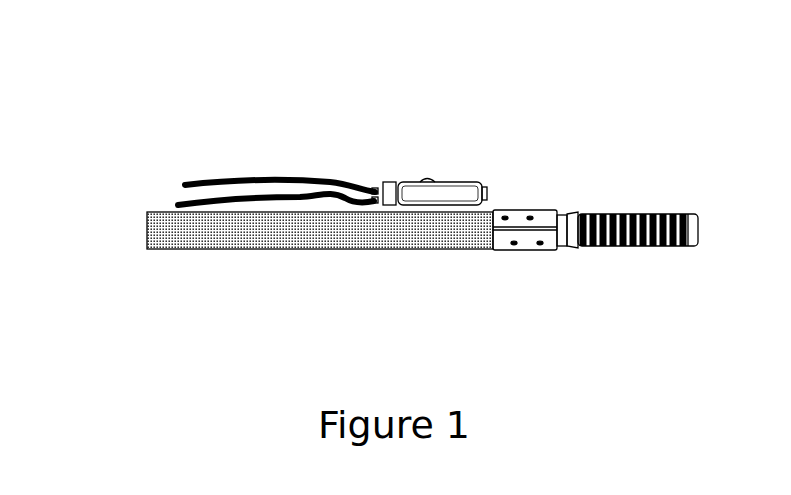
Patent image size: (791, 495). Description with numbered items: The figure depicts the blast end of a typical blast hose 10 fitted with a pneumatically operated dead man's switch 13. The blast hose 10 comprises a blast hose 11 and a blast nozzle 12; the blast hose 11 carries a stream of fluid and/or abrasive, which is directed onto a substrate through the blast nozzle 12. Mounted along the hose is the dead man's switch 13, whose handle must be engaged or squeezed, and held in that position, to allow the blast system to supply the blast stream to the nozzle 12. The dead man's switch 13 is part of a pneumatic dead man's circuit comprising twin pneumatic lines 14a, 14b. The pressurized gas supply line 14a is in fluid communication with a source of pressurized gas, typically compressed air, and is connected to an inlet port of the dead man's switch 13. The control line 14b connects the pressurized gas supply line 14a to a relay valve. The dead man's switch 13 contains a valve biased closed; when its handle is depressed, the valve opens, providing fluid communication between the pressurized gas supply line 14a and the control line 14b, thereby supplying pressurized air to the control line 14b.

The blast hose 10 is at (246, 66).
The blast hose 11 is at (182, 240).
The blast nozzle 12 is at (623, 240).
The dead man's switch 13 is at (468, 191).
The pressurized gas supply line 14a is at (182, 200).
The control line 14b is at (322, 181).